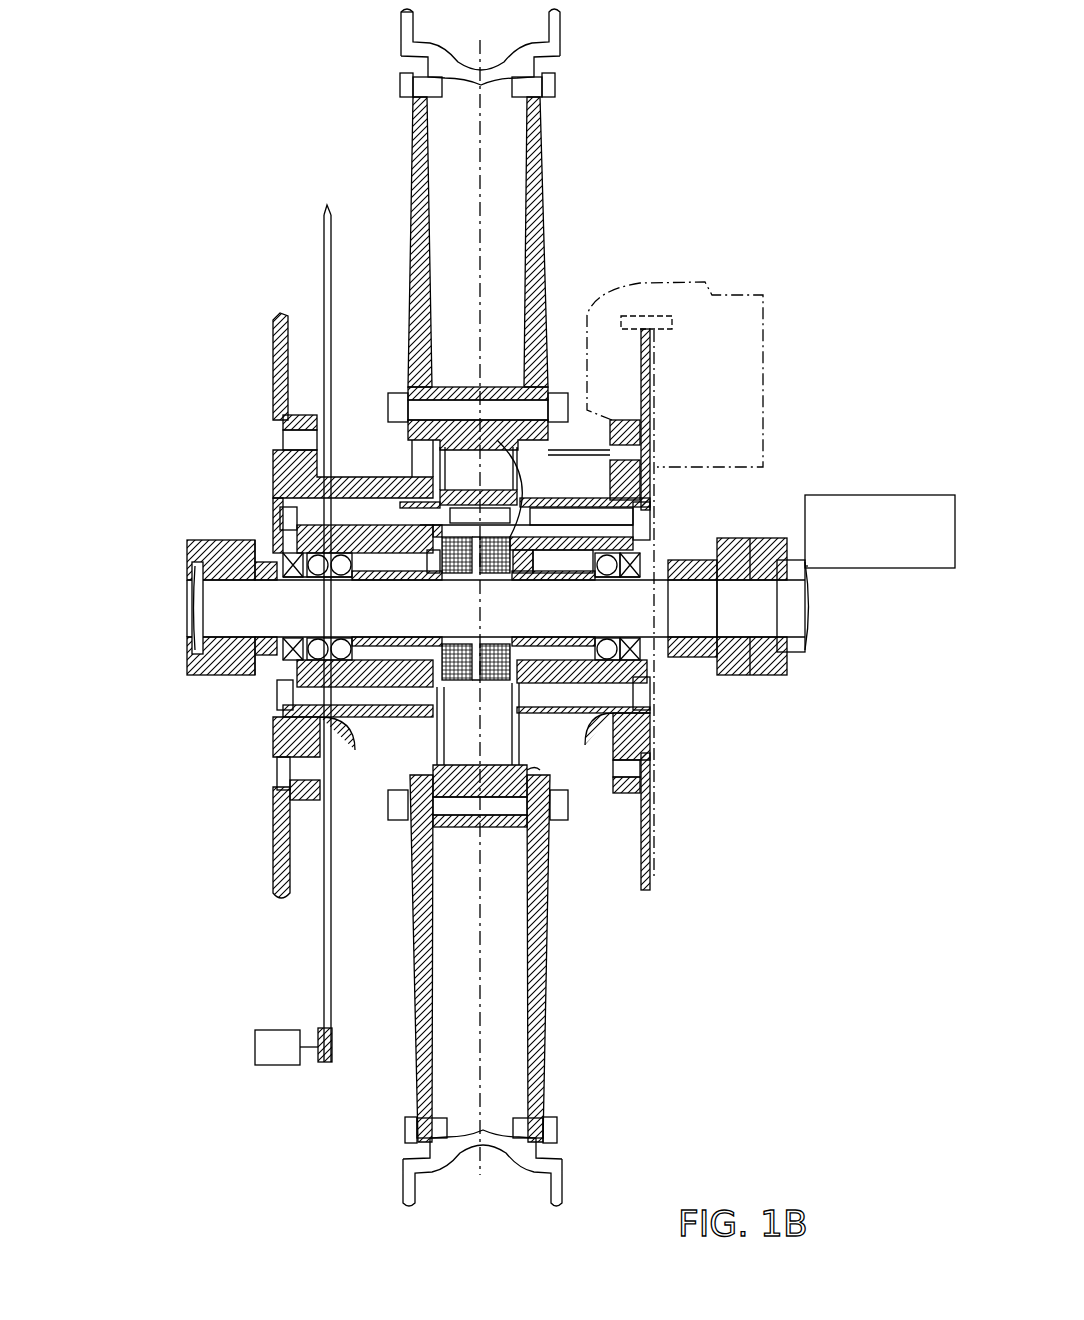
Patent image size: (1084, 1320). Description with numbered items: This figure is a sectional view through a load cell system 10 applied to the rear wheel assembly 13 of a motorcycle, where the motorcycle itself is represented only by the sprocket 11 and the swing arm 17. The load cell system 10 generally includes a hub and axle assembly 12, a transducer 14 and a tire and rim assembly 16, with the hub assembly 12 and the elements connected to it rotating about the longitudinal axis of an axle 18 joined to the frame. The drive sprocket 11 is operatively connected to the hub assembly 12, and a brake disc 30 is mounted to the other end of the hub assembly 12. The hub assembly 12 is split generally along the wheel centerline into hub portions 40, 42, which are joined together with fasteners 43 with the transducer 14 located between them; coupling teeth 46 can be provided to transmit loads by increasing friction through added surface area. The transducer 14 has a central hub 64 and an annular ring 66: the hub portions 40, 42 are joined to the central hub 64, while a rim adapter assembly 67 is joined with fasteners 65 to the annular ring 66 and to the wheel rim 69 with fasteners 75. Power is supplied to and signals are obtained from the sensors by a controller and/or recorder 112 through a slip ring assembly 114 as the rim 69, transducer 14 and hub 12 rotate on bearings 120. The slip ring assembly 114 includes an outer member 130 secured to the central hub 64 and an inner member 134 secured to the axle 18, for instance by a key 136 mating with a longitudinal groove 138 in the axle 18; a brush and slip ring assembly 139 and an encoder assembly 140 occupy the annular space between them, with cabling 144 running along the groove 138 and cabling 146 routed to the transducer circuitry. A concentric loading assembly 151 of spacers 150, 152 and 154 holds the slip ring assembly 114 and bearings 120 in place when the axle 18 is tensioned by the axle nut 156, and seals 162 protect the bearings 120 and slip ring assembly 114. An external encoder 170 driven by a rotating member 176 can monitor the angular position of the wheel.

The load cell system 10 is at (310, 195).
The sprocket 11 is at (276, 322).
The hub and axle assembly 12 is at (700, 528).
The rear wheel assembly 13 is at (340, 92).
The transducer 14 is at (500, 372).
The tire and rim assembly 16 is at (570, 142).
The swing arm 17 is at (758, 677).
The axle 18 is at (683, 645).
The brake disc 30 is at (600, 410).
The hub portion 40 is at (317, 477).
The hub portion 42 is at (526, 481).
The fasteners 43 is at (650, 502).
The coupling teeth 46 is at (407, 437).
The central hub 64 is at (465, 560).
The fasteners 65 is at (400, 397).
The annular ring 66 is at (498, 447).
The rim adapter assembly 67 is at (400, 202).
The wheel rim 69 is at (562, 30).
The fasteners 75 is at (555, 82).
The controller and/or recorder 112 is at (880, 531).
The slip ring assembly 114 is at (427, 674).
The bearings 120 is at (305, 550).
The outer member 130 is at (440, 537).
The inner member 134 is at (520, 552).
The key 136 is at (506, 584).
The longitudinal groove 138 is at (450, 584).
The brush and slip ring assembly 139 is at (510, 548).
The encoder assembly 140 is at (440, 540).
The cabling 144 is at (805, 566).
The cabling 146 is at (528, 500).
The spacer 150 is at (567, 690).
The concentric loading assembly 151 is at (273, 680).
The spacer 152 is at (262, 563).
The spacer 154 is at (698, 647).
The axle nut 156 is at (806, 650).
The seals 162 is at (657, 645).
The external encoder 170 is at (293, 1046).
The rotating member 176 is at (322, 250).